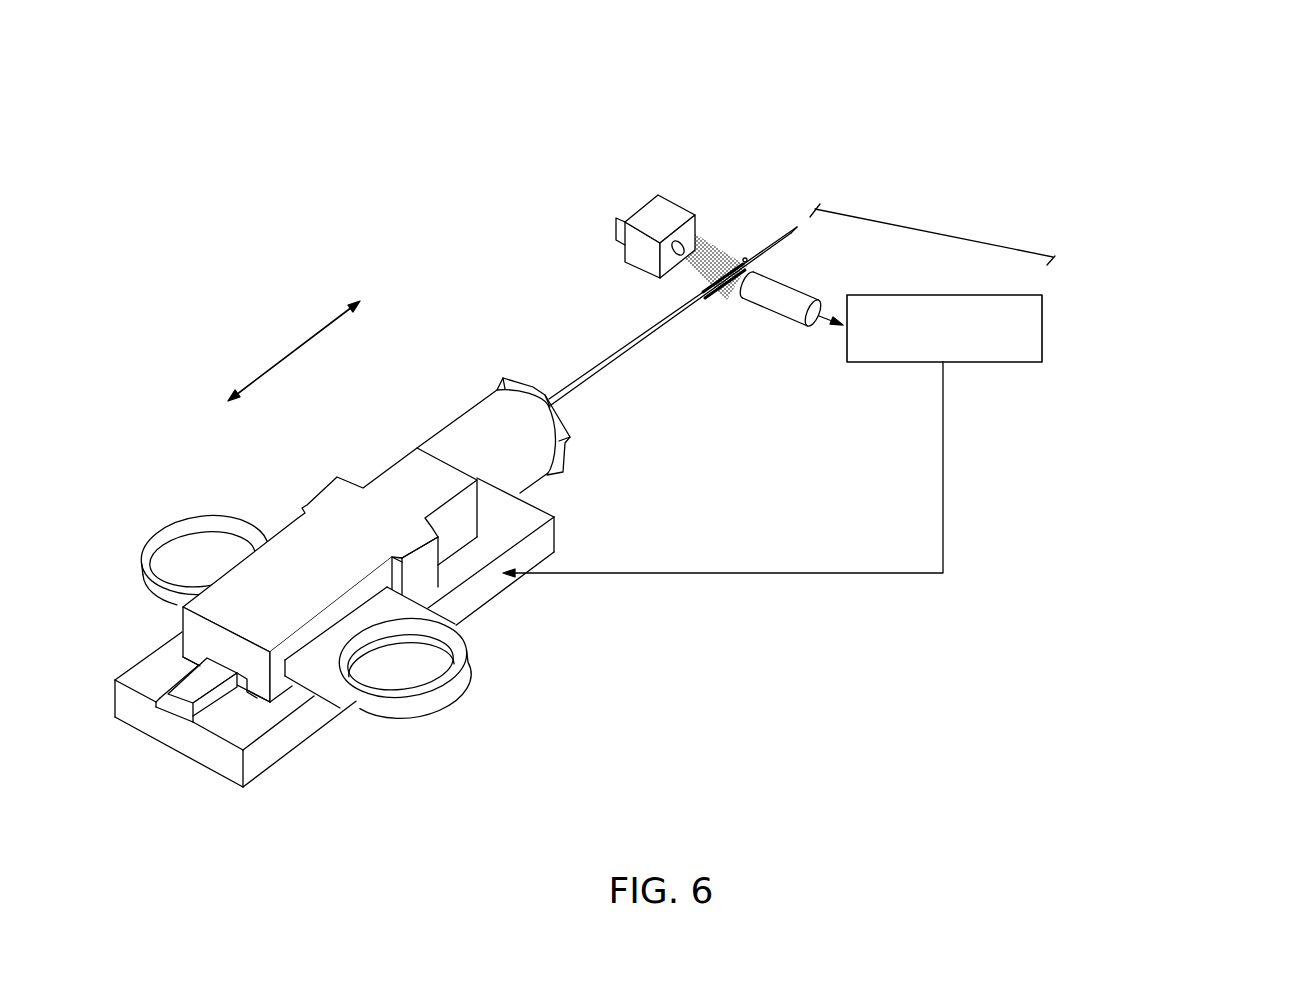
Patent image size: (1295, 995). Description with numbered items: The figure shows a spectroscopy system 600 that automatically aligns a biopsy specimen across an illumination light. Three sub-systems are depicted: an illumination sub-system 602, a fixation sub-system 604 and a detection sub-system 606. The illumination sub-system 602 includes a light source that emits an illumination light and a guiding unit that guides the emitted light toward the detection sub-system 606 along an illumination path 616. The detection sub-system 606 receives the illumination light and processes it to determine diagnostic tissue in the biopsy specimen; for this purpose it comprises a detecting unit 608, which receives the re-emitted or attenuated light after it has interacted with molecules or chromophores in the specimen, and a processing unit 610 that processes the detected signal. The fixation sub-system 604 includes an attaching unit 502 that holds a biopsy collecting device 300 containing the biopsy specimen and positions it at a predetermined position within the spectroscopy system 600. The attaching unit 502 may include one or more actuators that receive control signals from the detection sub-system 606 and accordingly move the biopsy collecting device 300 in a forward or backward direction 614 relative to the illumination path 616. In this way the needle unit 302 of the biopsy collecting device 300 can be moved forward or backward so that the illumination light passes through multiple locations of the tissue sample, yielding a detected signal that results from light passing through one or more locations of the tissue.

The spectroscopy system 600 is at (1150, 146).
The illumination sub-system 602 is at (653, 207).
The illumination path 616 is at (716, 257).
The detection sub-system 606 is at (936, 230).
The detecting unit 608 is at (793, 293).
The processing unit 610 is at (1044, 327).
The needle unit 302 is at (624, 331).
The biopsy collecting device 300 is at (463, 392).
The forward or backward direction 614 is at (289, 352).
The attaching unit 502 is at (492, 605).
The fixation sub-system 604 is at (286, 805).